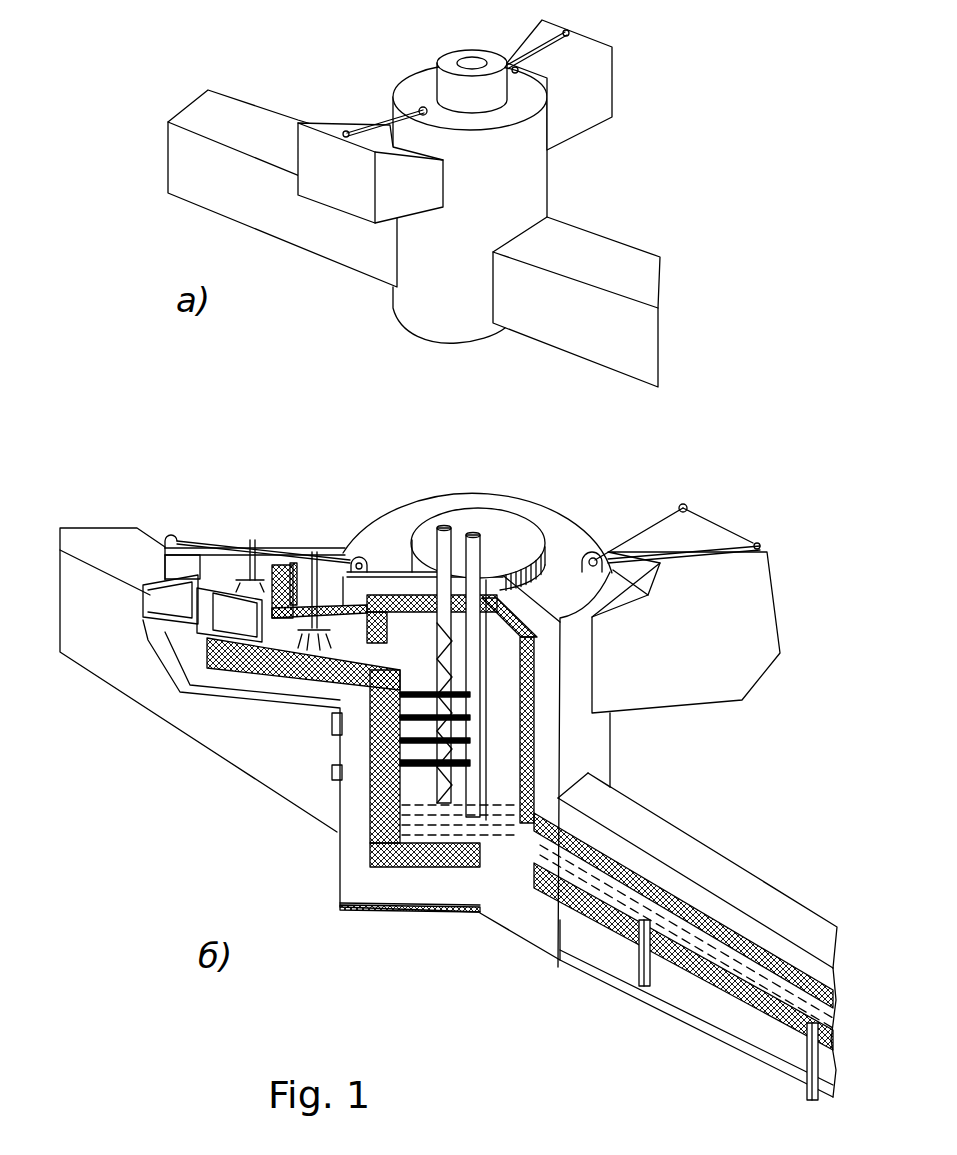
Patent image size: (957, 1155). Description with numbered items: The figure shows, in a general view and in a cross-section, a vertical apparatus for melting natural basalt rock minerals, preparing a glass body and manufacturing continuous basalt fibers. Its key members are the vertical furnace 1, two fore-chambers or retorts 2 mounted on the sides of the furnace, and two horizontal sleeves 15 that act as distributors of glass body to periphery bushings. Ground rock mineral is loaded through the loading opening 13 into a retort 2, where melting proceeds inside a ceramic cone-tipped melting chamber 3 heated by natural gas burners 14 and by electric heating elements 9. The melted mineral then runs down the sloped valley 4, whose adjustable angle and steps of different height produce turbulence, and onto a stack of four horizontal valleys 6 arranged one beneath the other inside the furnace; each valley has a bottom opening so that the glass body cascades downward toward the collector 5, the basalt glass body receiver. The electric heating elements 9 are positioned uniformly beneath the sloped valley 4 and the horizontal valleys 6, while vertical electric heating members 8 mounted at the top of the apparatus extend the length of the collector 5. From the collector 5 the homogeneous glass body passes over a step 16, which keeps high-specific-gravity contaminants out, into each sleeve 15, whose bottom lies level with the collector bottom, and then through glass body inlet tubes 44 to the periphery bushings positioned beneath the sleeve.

The vertical furnace 1 is at (418, 87).
The fore-chamber 2 is at (330, 128).
The melting chamber 3 is at (213, 598).
The sloped valley 4 is at (206, 657).
The collector 5 is at (458, 807).
The stack of horizontal valleys 6 is at (426, 712).
The vertical electric heating members 8 is at (448, 530).
The electric heating elements 9 is at (333, 770).
The ground rock mineral loading opening 13 is at (165, 609).
The natural gas burners 14 is at (318, 553).
The horizontal sleeve 15 is at (241, 110).
The step 16 is at (518, 833).
The glass body inlet tubes 44 is at (642, 967).